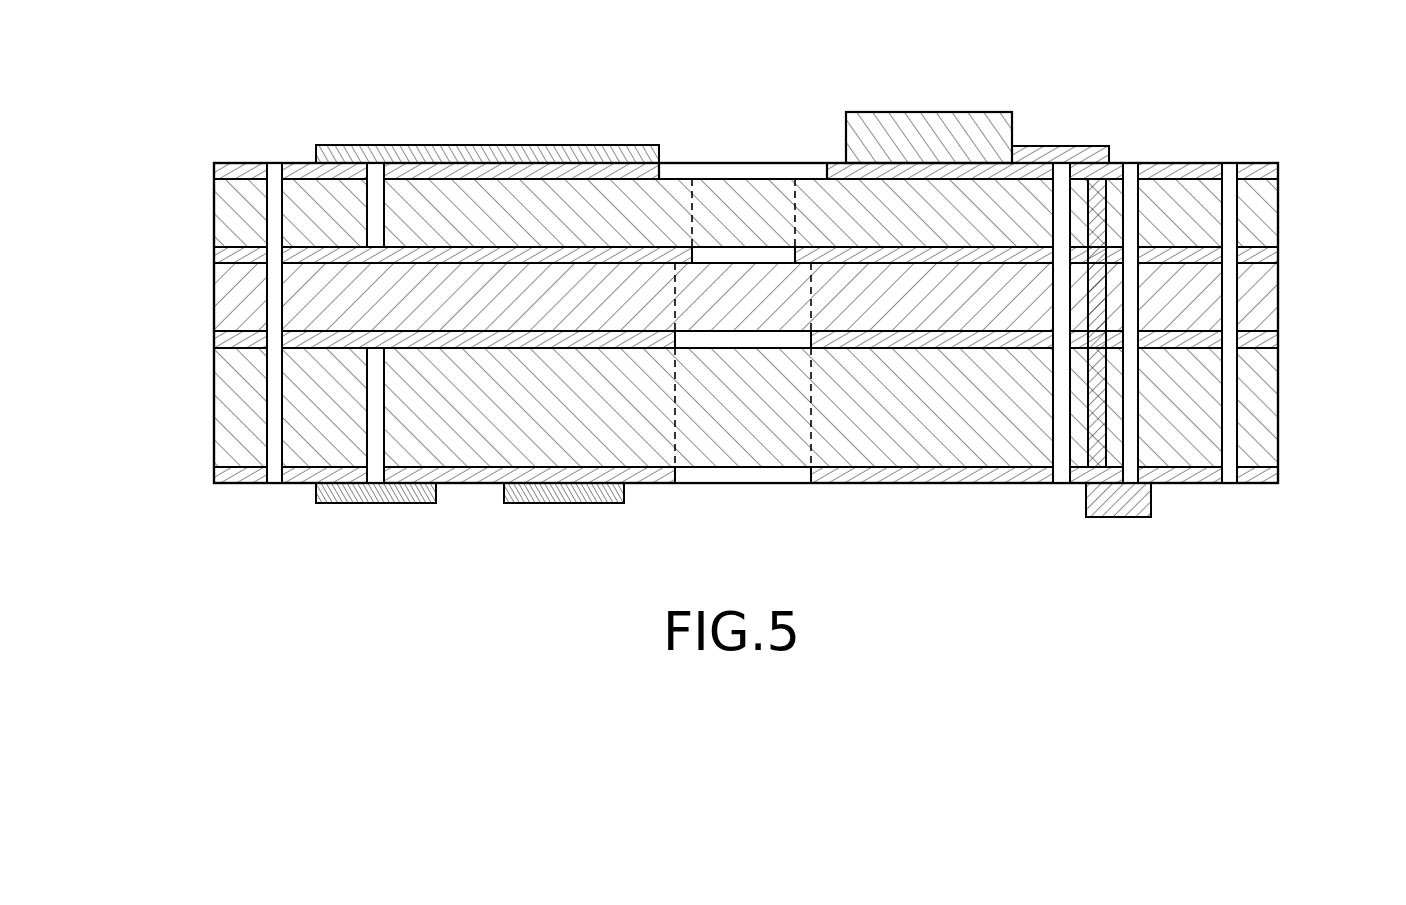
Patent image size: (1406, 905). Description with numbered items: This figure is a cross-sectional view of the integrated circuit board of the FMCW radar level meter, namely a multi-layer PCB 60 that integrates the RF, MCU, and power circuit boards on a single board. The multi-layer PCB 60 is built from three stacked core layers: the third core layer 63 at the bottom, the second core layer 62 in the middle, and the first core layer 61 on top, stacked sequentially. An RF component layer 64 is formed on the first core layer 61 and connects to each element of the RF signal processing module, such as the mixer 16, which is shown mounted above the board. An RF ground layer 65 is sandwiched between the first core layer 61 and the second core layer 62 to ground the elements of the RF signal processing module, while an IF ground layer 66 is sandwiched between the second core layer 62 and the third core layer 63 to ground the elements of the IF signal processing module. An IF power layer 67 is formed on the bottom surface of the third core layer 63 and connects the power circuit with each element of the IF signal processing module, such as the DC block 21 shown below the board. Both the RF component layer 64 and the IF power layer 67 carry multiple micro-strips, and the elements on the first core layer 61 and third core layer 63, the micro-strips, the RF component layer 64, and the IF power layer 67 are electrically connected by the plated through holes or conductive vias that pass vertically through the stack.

The multi-layer PCB 60 is at (1302, 397).
The first core layer 61 is at (223, 218).
The second core layer 62 is at (222, 298).
The third core layer 63 is at (223, 418).
The RF component layer 64 is at (222, 173).
The RF ground layer 65 is at (222, 257).
The IF ground layer 66 is at (228, 338).
The IF power layer 67 is at (222, 473).
The mixer 16 is at (910, 130).
The DC block 21 is at (1117, 507).